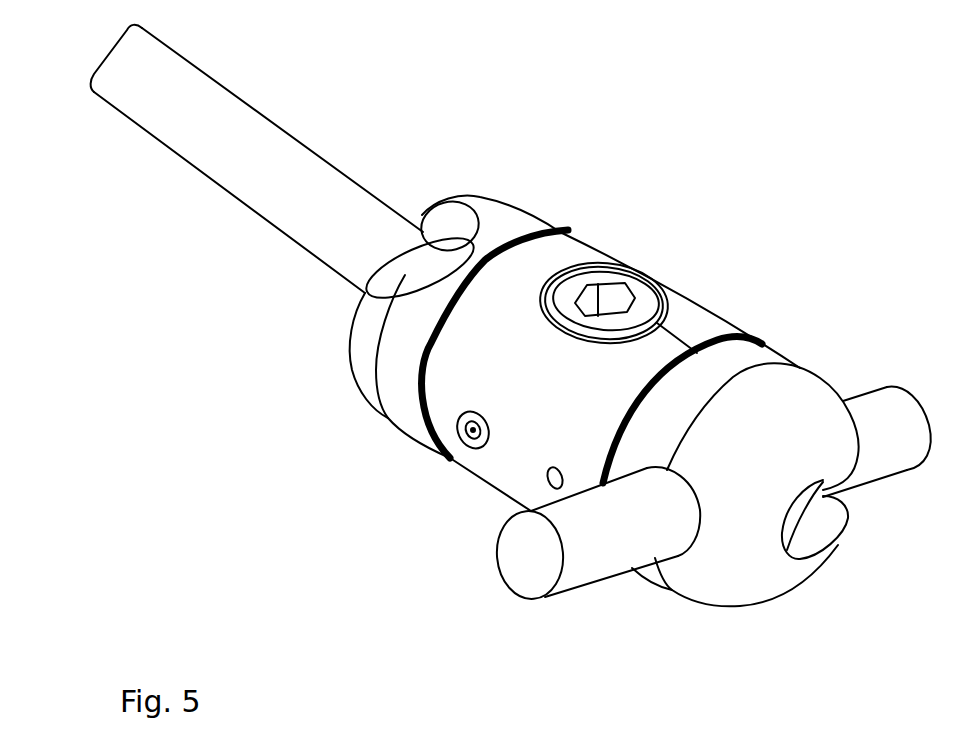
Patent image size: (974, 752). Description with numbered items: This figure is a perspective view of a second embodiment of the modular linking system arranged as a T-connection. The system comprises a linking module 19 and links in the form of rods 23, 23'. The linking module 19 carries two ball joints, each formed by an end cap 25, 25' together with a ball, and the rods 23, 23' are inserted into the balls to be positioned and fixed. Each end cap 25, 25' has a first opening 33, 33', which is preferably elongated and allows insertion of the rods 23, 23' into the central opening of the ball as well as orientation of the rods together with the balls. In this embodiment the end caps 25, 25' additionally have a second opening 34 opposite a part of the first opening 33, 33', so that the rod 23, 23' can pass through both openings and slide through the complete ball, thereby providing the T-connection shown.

The rod 23' is at (257, 159).
The first opening 33' is at (344, 256).
The linking module 19 is at (379, 461).
The end cap 25' is at (332, 330).
The end cap 25 is at (763, 371).
The second opening 34 is at (691, 568).
The first opening 33 is at (870, 519).
The rod 23 is at (660, 494).